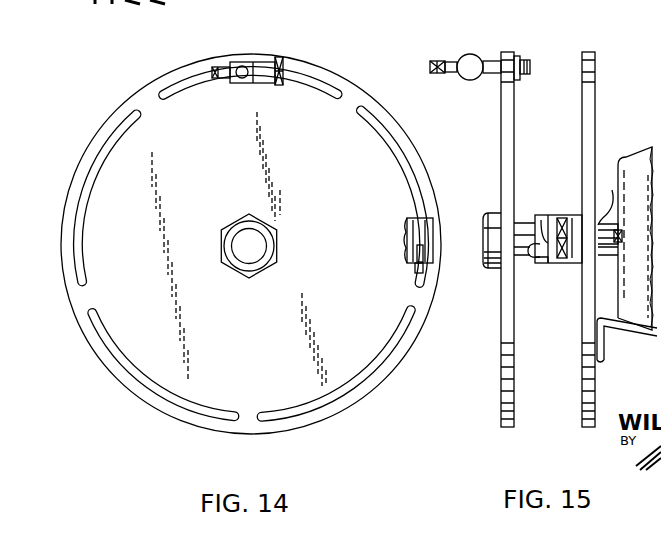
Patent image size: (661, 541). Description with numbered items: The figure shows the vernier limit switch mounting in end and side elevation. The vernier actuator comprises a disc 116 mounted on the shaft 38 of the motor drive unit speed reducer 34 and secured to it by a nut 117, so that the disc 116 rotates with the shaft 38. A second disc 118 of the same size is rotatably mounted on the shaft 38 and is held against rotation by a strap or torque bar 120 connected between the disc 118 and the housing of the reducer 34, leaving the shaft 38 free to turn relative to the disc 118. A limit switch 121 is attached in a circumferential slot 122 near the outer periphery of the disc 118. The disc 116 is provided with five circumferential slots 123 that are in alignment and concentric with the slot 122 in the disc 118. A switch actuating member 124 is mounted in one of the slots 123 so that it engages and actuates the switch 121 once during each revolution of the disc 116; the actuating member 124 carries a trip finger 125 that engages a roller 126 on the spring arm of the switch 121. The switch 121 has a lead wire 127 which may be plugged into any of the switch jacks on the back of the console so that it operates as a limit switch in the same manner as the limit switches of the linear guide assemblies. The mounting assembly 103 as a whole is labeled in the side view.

In FIG. 15, the motor drive unit speed reducer 34 is at (640, 153).
In FIG. 15, the shaft 38 is at (518, 258).
In FIG. 15, the mounting assembly 103 is at (645, 41).
In FIG. 14, the disc 116 is at (330, 120).
In FIG. 15, the disc 116 is at (503, 117).
In FIG. 14, the nut 117 is at (262, 268).
In FIG. 15, the nut 117 is at (491, 270).
In FIG. 14, the disc 118 is at (430, 252).
In FIG. 15, the disc 118 is at (585, 90).
In FIG. 15, the torque bar 120 is at (608, 340).
In FIG. 14, the limit switch 121 is at (428, 232).
In FIG. 15, the limit switch 121 is at (550, 220).
In FIG. 14, the circumferential slot 122 is at (425, 272).
In FIG. 14, the circumferential slots 123 is at (172, 96).
In FIG. 14, the switch actuating member 124 is at (250, 83).
In FIG. 15, the switch actuating member 124 is at (487, 55).
In FIG. 15, the trip finger 125 is at (523, 58).
In FIG. 15, the roller 126 is at (537, 262).
In FIG. 15, the lead wire 127 is at (607, 215).